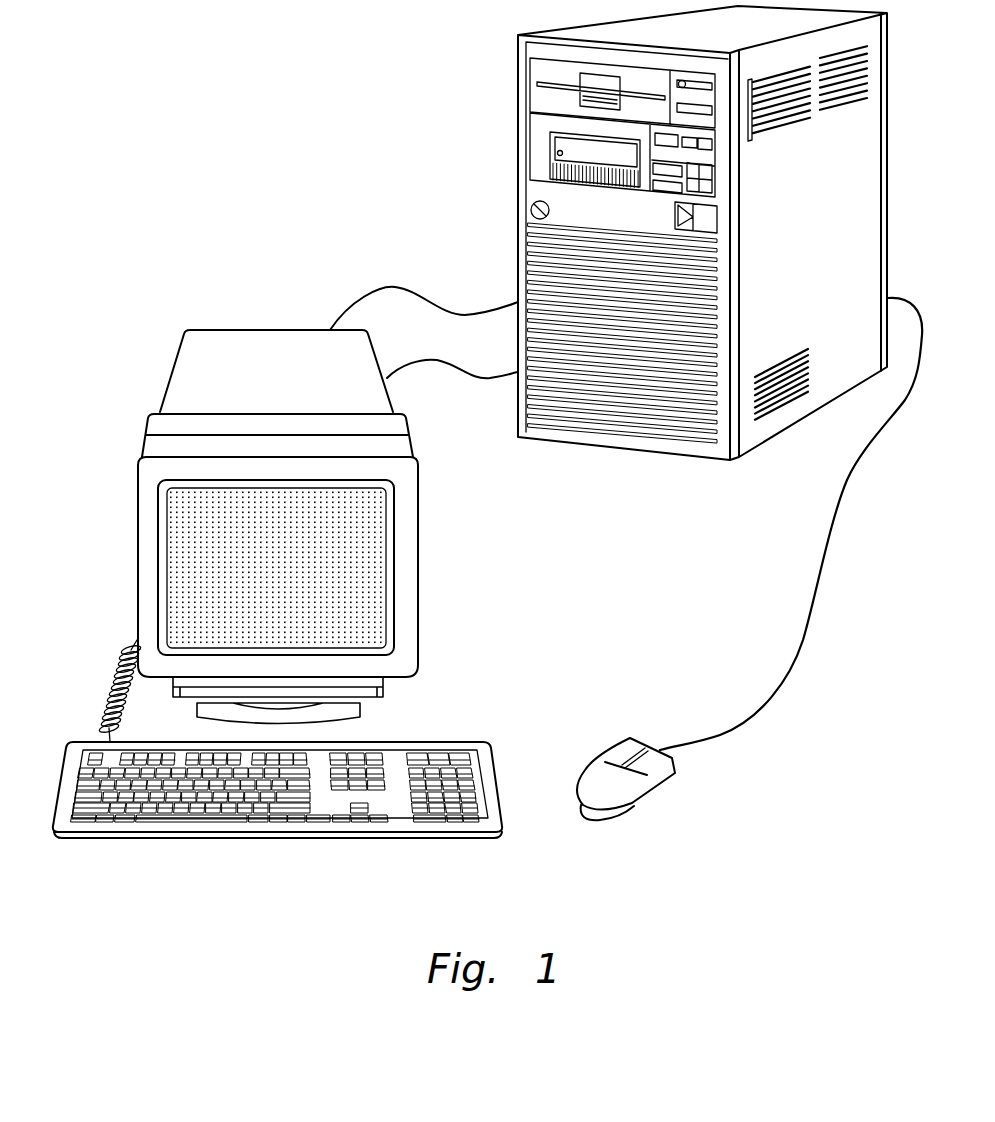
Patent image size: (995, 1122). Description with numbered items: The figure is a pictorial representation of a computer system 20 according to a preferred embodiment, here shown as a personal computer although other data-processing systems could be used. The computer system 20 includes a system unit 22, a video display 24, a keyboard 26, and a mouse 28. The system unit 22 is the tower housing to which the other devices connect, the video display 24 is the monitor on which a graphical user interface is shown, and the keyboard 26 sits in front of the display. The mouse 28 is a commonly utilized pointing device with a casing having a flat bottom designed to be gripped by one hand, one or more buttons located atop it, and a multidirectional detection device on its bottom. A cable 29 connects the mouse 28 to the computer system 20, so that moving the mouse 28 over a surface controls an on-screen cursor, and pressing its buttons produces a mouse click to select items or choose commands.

The computer system 20 is at (306, 204).
The system unit 22 is at (535, 192).
The video display 24 is at (292, 350).
The keyboard 26 is at (308, 832).
The mouse 28 is at (632, 800).
The cable 29 is at (788, 661).